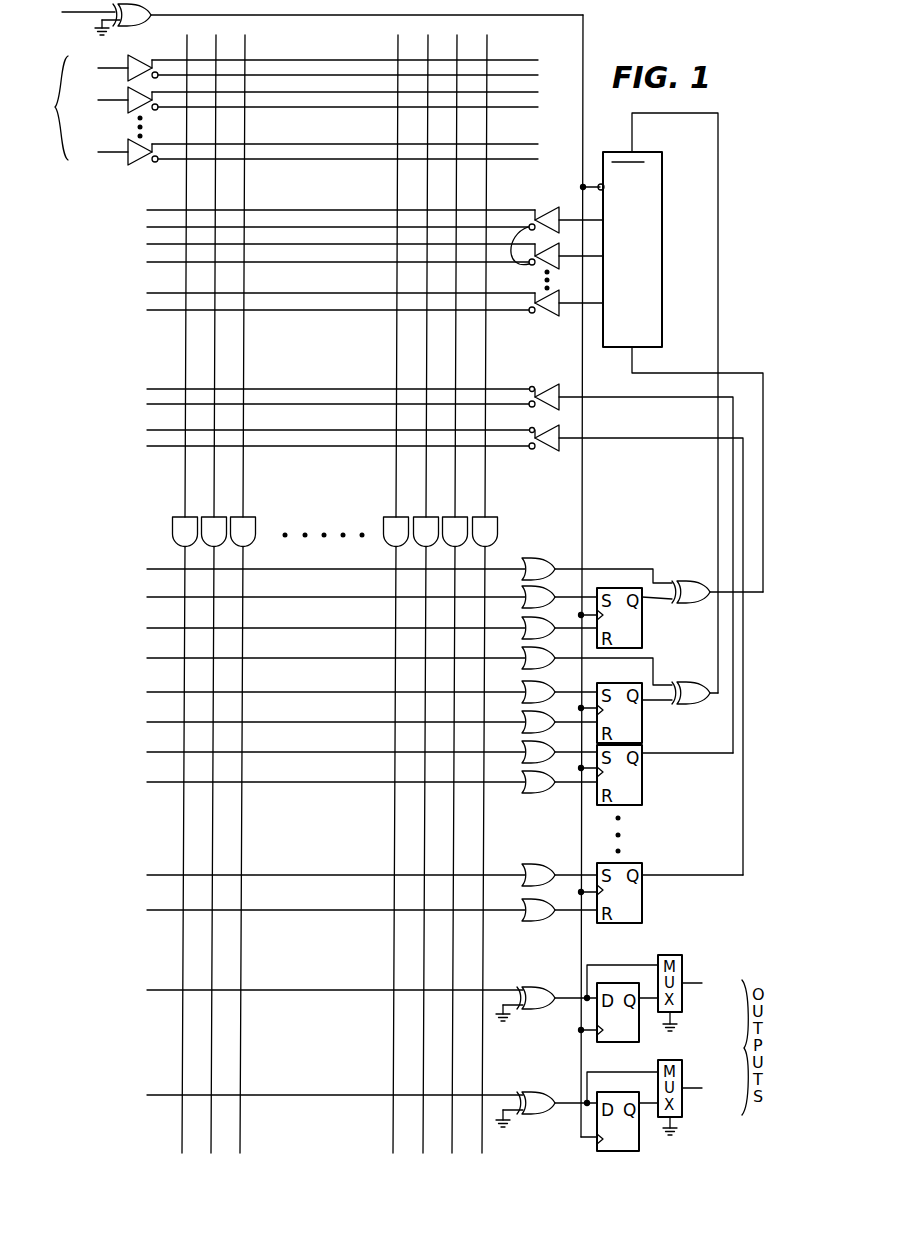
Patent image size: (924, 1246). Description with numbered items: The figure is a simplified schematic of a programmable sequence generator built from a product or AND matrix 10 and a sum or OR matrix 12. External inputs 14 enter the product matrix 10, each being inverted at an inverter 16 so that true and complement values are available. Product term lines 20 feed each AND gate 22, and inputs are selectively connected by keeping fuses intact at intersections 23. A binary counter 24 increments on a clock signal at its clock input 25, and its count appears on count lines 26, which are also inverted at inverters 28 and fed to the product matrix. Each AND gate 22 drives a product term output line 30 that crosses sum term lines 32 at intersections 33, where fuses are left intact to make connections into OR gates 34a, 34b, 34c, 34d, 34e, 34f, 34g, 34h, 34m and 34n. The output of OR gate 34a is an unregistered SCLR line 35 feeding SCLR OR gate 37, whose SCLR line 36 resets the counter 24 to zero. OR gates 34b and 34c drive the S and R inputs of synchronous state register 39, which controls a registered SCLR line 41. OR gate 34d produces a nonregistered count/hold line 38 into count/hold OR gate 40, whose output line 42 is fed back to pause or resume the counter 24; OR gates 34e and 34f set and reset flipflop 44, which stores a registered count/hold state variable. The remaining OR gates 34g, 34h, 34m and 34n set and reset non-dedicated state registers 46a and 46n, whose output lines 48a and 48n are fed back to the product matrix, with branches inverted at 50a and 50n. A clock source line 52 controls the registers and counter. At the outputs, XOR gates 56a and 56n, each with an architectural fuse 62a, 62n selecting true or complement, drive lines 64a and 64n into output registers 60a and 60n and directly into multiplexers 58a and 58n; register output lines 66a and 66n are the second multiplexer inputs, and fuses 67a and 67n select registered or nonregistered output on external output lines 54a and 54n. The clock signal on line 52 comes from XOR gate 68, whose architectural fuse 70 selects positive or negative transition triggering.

The product matrix 10 is at (84, 272).
The sum matrix 12 is at (106, 830).
The external inputs 14 is at (100, 60).
The inverter 16 is at (155, 62).
The product term lines 20 is at (216, 280).
The AND gate 22 is at (242, 516).
The intersections 23 is at (245, 95).
The counter 24 is at (662, 220).
The clock input 25 is at (599, 186).
The count lines 26 is at (572, 302).
The inverters 28 is at (532, 293).
The product term output lines 30 is at (183, 553).
The sum term lines 32 is at (298, 690).
The intersections 33 is at (212, 718).
The OR gate 34a is at (526, 562).
The OR gate 34b is at (552, 584).
The OR gate 34c is at (523, 624).
The OR gate 34d is at (523, 655).
The OR gate 34e is at (523, 689).
The OR gate 34f is at (523, 718).
The OR gate 34g is at (523, 748).
The OR gate 34h is at (527, 790).
The OR gate 34m is at (526, 866).
The OR gate 34n is at (527, 918).
The unregistered SCLR line 35 is at (640, 568).
The SCLR line 36 is at (630, 372).
The SCLR OR gate 37 is at (685, 580).
The nonregistered count/hold signal line 38 is at (656, 665).
The synchronous state register 39 is at (645, 626).
The count/hold OR gate 40 is at (686, 683).
The registered SCLR line 41 is at (652, 582).
The count/hold line 42 is at (718, 342).
The synchronous state register 44 is at (645, 728).
The state register 46a is at (645, 790).
The state register 46n is at (648, 864).
The output line 48a is at (640, 399).
The output line 48n is at (640, 438).
The inverter 50a is at (535, 388).
The inverter 50n is at (535, 430).
The clock source line 52 is at (583, 48).
The external output line 54a is at (697, 982).
The external output line 54n is at (697, 1087).
The XOR gate 56a is at (536, 1006).
The XOR gate 56n is at (535, 1111).
The multiplexer 58a is at (670, 954).
The multiplexer 58n is at (665, 1059).
The output register 60a is at (622, 1042).
The output register 60n is at (600, 1150).
The architectural fuse 62a is at (508, 996).
The architectural fuse 62n is at (508, 1102).
The output line 64a is at (562, 995).
The output line 64n is at (562, 1100).
The output line 66a is at (650, 986).
The output line 66n is at (645, 1130).
The architectural fuse 67a is at (686, 1023).
The architectural fuse 67n is at (686, 1128).
The XOR gate 68 is at (151, 21).
The architectural fuse 70 is at (138, 57).